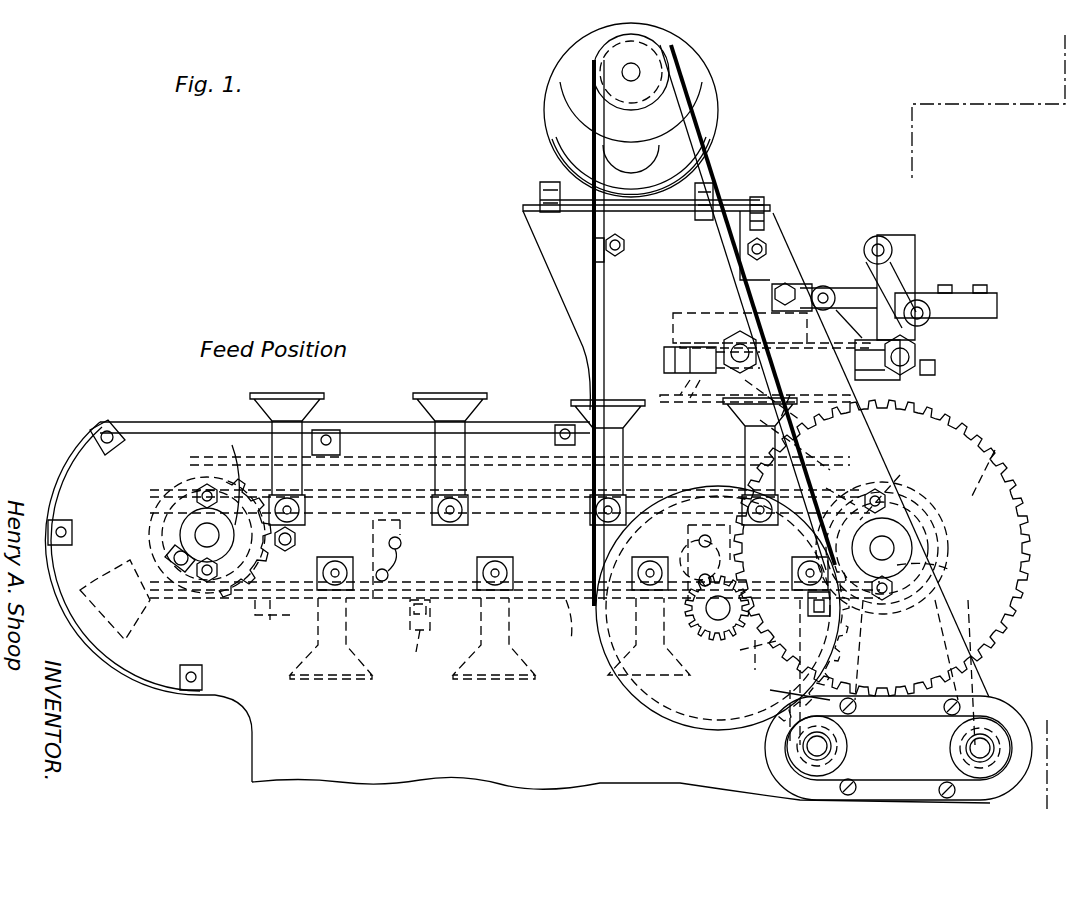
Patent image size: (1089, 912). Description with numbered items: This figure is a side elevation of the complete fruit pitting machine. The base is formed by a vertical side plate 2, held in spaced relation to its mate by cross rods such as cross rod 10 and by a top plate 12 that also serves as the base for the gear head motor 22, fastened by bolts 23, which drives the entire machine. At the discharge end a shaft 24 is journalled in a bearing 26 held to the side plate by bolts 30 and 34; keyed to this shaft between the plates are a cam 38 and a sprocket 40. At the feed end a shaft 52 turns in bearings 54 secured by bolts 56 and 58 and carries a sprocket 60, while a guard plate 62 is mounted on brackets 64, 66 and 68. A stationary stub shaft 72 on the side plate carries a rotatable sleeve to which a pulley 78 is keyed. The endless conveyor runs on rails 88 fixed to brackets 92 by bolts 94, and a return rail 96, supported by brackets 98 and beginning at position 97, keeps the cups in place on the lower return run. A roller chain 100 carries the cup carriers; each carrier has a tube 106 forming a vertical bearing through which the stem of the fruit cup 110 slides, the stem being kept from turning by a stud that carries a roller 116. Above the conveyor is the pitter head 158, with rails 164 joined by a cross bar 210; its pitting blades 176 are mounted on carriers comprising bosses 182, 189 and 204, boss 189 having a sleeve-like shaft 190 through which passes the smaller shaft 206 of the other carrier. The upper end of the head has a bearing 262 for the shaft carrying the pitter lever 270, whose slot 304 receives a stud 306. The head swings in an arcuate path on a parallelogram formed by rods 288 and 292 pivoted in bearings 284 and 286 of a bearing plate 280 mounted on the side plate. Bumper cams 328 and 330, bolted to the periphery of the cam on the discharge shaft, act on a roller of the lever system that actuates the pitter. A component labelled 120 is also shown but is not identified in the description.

The side plate 2 is at (1075, 55).
The cross rod 10 is at (780, 218).
The top plate 12 is at (668, 210).
The gear head motor 22 is at (705, 128).
The bolts 23 is at (548, 188).
The shaft 24 is at (886, 548).
The bearing 26 is at (936, 672).
The bolt 30 is at (840, 672).
The bolt 34 is at (900, 475).
The cam 38 is at (950, 570).
The sprocket 40 is at (830, 547).
The shaft 52 is at (200, 535).
The bearing 54 is at (219, 477).
The bolt 56 is at (205, 585).
The bolt 58 is at (185, 502).
The sprocket 60 is at (205, 580).
The guard plate 62 is at (60, 462).
The bracket 64 is at (112, 417).
The bracket 66 is at (47, 505).
The bracket 68 is at (175, 690).
The stub shaft 72 is at (700, 628).
The pulley 78 is at (622, 692).
The rail 88 is at (548, 515).
The bracket 92 is at (402, 541).
The bolt 94 is at (388, 573).
The return rail 96 is at (631, 520).
The position 97 is at (850, 476).
The bracket 98 is at (583, 663).
The chain 100 is at (262, 618).
The tube 106 is at (500, 625).
The cup 110 is at (324, 412).
The roller 116 is at (342, 553).
The block 120 is at (870, 600).
The pitter head 158 is at (910, 292).
The rail 164 is at (710, 380).
The pitting blade 176 is at (760, 342).
The boss 182 is at (670, 375).
The boss 189 is at (826, 486).
The sleeve-like shaft 190 is at (905, 375).
The boss 204 is at (813, 410).
The smaller shaft 206 is at (918, 364).
The cross bar 210 is at (660, 350).
The bearing 262 is at (884, 244).
The pitter lever 270 is at (905, 265).
The bearing plate 280 is at (1010, 712).
The bearing 284 is at (800, 758).
The bearing 286 is at (1005, 735).
The rod 288 is at (790, 682).
The rod 292 is at (960, 668).
The slot 304 is at (932, 322).
The stud 306 is at (955, 302).
The bumper cam 328 is at (995, 450).
The bumper cam 330 is at (708, 640).